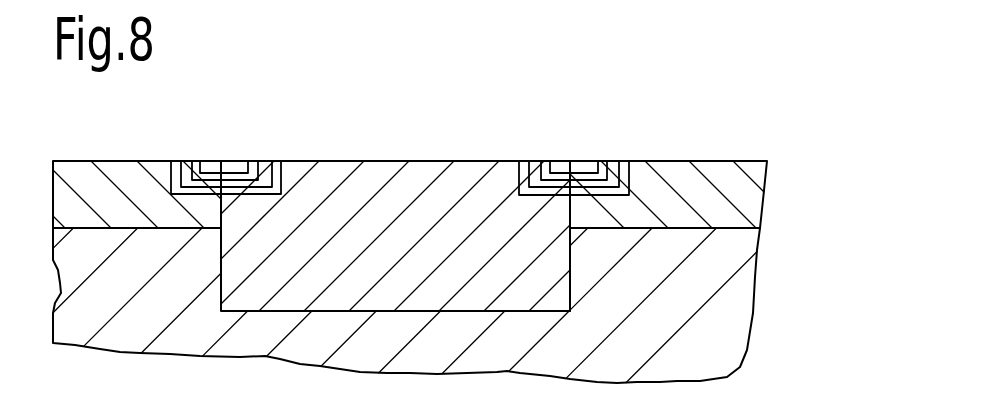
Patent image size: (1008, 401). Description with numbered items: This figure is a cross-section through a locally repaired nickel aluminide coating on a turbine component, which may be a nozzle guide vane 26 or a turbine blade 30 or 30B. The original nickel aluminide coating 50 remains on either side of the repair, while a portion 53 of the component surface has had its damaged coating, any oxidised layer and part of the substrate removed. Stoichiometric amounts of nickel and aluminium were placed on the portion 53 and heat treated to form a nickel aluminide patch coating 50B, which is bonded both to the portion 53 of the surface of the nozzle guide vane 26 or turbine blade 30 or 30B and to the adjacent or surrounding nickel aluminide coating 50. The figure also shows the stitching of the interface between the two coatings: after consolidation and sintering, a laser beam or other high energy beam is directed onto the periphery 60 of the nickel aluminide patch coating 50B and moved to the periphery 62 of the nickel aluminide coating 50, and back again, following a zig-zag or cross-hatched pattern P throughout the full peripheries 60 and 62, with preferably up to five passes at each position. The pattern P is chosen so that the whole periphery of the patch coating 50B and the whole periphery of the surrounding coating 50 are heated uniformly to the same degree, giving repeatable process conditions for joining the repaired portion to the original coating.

The nozzle guide vane 26 is at (466, 305).
The turbine blade 30 is at (466, 305).
The turbine blade 30B is at (720, 318).
The nickel aluminide coating 50 is at (85, 177).
The nickel aluminide patch coating 50B is at (569, 160).
The portion of the surface 53 is at (417, 313).
The periphery of the nickel aluminide patch coating 60 is at (258, 167).
The periphery of the nickel aluminide coating 62 is at (196, 165).
The pattern P is at (248, 162).